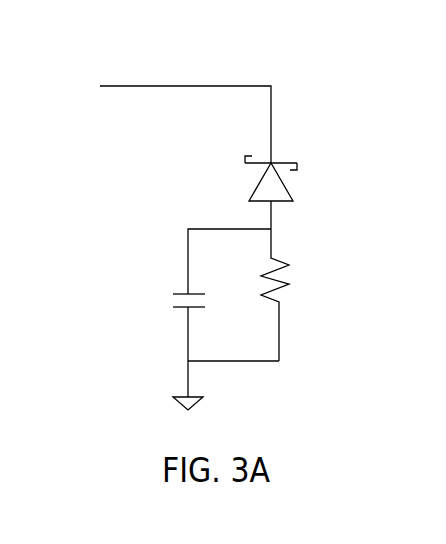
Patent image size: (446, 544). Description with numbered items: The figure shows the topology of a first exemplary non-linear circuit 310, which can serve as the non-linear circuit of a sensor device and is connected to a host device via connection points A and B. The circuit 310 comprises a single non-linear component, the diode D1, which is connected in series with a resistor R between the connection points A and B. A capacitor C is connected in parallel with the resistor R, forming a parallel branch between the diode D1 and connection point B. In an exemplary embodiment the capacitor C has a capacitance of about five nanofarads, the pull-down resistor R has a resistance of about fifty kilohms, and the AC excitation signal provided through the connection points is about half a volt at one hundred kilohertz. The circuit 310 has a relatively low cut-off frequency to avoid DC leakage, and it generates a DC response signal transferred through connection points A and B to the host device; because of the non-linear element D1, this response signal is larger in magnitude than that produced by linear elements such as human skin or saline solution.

The non-linear circuit 310 is at (130, 50).
The connection point A is at (177, 121).
The connection point B is at (175, 391).
The capacitor C is at (177, 302).
The resistor R is at (285, 295).
The diode D1 is at (286, 192).